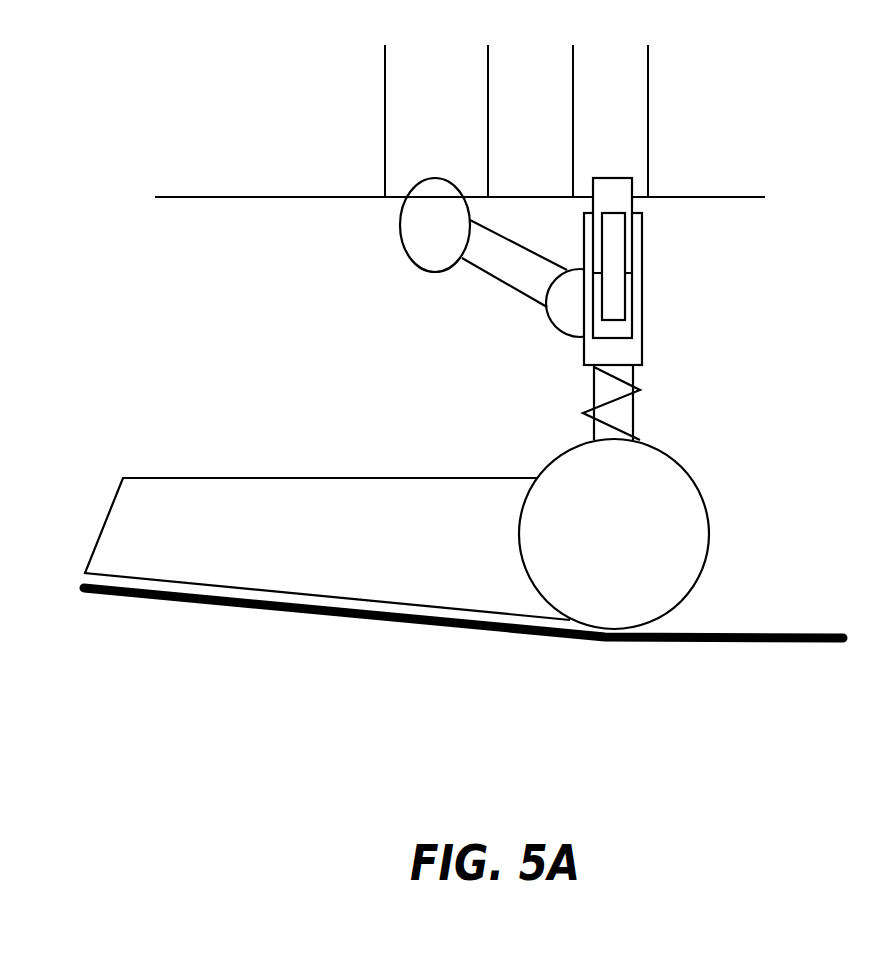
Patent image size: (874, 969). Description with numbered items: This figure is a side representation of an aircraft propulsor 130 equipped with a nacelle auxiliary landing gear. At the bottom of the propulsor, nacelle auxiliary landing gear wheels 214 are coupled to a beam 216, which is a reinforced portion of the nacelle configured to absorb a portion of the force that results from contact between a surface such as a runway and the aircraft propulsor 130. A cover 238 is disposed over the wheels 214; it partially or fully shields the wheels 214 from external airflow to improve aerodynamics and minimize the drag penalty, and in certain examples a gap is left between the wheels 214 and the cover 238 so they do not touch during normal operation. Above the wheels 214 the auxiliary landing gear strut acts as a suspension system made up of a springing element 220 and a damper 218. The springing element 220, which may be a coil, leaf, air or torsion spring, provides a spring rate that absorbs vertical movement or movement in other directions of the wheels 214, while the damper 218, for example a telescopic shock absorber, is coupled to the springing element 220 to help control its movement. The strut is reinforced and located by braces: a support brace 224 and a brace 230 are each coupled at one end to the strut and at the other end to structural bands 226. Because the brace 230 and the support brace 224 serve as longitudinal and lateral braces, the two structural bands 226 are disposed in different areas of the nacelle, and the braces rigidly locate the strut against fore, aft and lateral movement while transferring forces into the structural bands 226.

The aircraft propulsor 130 is at (132, 92).
The structural band 226 is at (418, 122).
The brace 230 is at (503, 285).
The support brace 224 is at (607, 268).
The damper 218 is at (647, 346).
The springing element 220 is at (613, 418).
The beam 216 is at (195, 508).
The nacelle auxiliary landing gear wheels 214 is at (682, 505).
The cover 238 is at (418, 628).